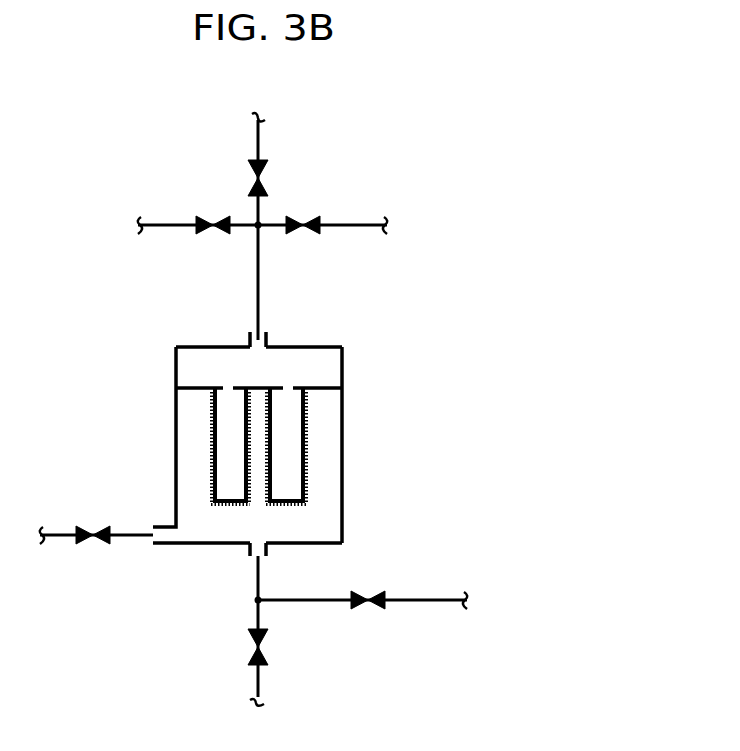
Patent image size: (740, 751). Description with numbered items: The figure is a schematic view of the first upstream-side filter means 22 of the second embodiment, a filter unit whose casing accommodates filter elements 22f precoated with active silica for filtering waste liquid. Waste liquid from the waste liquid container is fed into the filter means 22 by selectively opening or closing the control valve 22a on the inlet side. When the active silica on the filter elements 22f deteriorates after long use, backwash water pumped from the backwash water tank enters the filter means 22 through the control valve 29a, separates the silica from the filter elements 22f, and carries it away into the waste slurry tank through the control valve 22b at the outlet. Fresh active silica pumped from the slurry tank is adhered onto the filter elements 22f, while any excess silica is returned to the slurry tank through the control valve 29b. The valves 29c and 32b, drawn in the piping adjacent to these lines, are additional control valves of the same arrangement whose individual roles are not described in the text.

The first upstream-side filter means 22 is at (346, 391).
The filter elements 22f is at (213, 425).
The control valve 22a is at (93, 526).
The control valve 22b is at (247, 648).
The control valve 29a is at (213, 236).
The control valve 29b is at (303, 236).
The valve 29c is at (269, 181).
The valve 32b is at (369, 611).